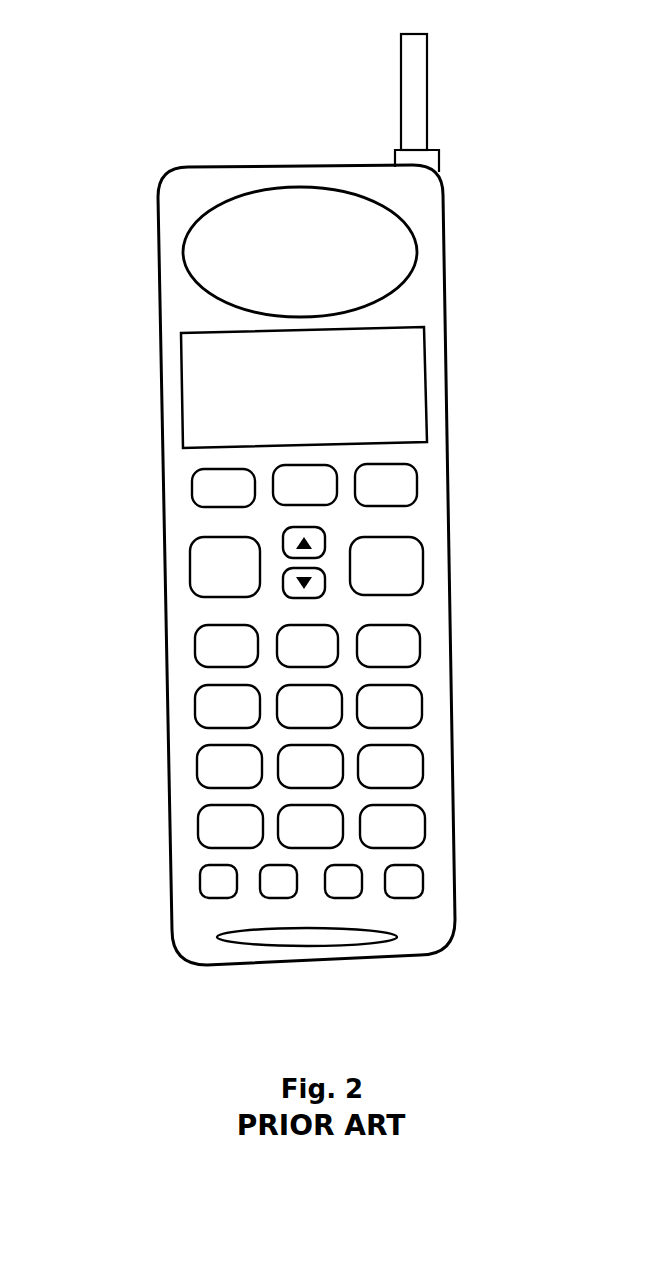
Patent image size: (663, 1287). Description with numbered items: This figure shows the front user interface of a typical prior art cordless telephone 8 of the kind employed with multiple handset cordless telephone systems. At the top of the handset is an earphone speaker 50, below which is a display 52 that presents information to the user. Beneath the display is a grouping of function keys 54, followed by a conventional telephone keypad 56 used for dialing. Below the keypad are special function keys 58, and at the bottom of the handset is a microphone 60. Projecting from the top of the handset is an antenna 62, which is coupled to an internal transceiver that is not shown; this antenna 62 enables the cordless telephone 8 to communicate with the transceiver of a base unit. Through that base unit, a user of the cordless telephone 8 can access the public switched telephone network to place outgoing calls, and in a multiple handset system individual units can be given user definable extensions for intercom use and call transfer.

The cordless telephone 8 is at (449, 677).
The earphone speaker 50 is at (184, 263).
The display 52 is at (181, 392).
The function keys 54 is at (181, 598).
The telephone keypad 56 is at (195, 847).
The special function keys 58 is at (196, 897).
The microphone 60 is at (223, 945).
The antenna 62 is at (401, 92).